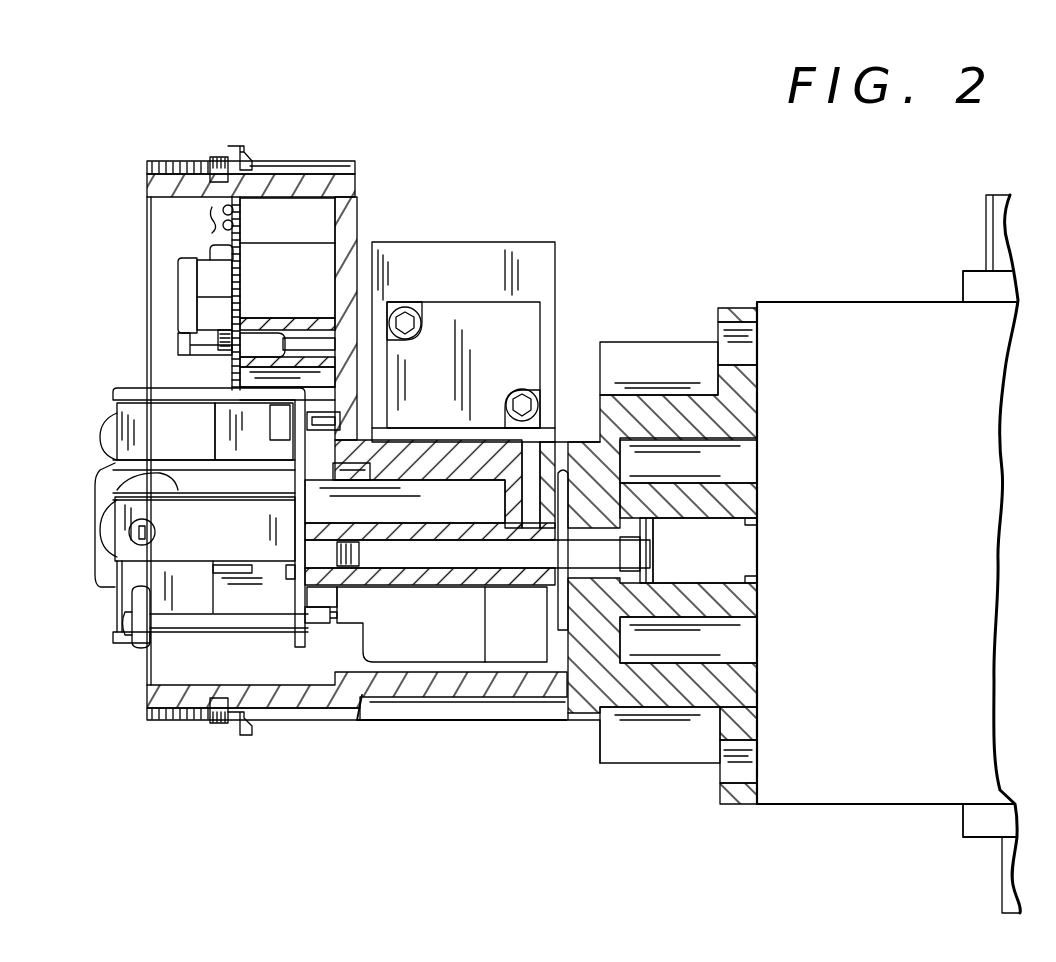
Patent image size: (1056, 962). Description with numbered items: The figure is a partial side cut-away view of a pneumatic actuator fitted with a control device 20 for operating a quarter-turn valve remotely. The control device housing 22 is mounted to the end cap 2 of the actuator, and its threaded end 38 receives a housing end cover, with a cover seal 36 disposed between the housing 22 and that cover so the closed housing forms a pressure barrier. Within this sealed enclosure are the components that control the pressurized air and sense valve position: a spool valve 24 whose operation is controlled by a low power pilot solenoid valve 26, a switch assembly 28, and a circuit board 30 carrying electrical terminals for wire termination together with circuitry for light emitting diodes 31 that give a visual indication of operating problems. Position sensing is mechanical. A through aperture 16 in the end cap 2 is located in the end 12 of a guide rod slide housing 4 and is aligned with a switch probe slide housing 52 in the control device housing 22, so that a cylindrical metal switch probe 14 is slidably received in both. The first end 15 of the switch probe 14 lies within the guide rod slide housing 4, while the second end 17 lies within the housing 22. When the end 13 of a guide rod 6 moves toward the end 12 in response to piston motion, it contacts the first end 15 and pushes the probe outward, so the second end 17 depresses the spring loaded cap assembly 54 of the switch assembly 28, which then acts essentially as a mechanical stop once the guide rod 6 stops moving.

The control device 20 is at (513, 88).
The end cap 2 is at (735, 308).
The guide rod slide housing 4 is at (690, 592).
The guide rod 6 is at (740, 537).
The end of guide rod slide housing 12 is at (623, 575).
The end of guide rod 13 is at (645, 524).
The switch probe 14 is at (508, 557).
The first end of switch probe 15 is at (632, 552).
The through aperture 16 is at (597, 573).
The second end of switch probe 17 is at (283, 568).
The housing 22 is at (355, 165).
The spool valve 24 is at (556, 242).
The solenoid valve 26 is at (405, 647).
The switch assembly 28 is at (175, 523).
The circuit board 30 is at (200, 293).
The light emitting diodes 31 is at (212, 212).
The cover seal 36 is at (214, 160).
The end of control device housing 38 is at (172, 160).
The switch probe slide housing 52 is at (477, 578).
The spring loaded cap assembly 54 is at (215, 610).